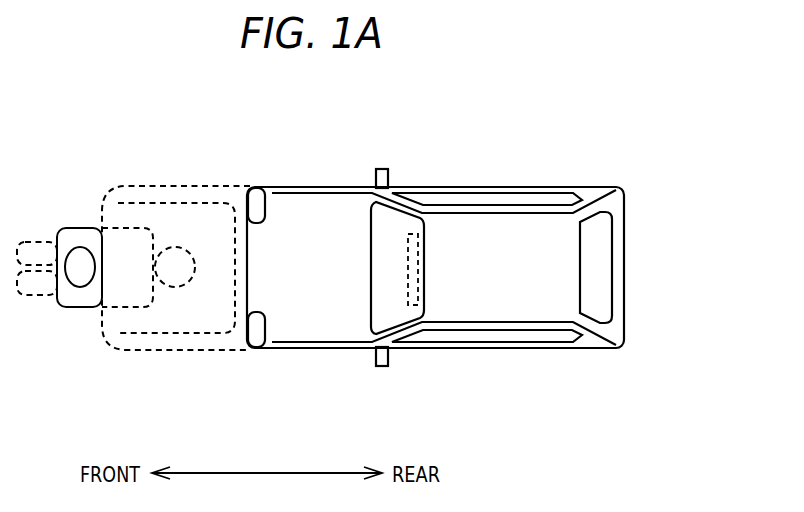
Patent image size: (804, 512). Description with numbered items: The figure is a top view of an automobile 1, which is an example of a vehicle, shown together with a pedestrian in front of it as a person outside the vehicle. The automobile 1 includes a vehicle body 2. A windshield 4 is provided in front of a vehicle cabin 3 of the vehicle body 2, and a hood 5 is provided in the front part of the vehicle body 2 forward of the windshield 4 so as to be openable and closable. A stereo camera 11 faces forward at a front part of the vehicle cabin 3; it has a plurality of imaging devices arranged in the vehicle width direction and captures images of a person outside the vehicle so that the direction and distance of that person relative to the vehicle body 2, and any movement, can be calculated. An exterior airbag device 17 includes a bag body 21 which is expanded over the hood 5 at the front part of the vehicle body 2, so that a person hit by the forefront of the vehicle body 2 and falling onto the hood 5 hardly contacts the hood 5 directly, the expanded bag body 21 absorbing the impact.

The automobile 1 is at (451, 138).
The vehicle body 2 is at (352, 187).
The vehicle cabin 3 is at (534, 222).
The windshield 4 is at (395, 312).
The hood 5 is at (295, 222).
The stereo camera 11 is at (419, 306).
The bag body 21 is at (157, 301).
The exterior airbag device 17 is at (198, 315).